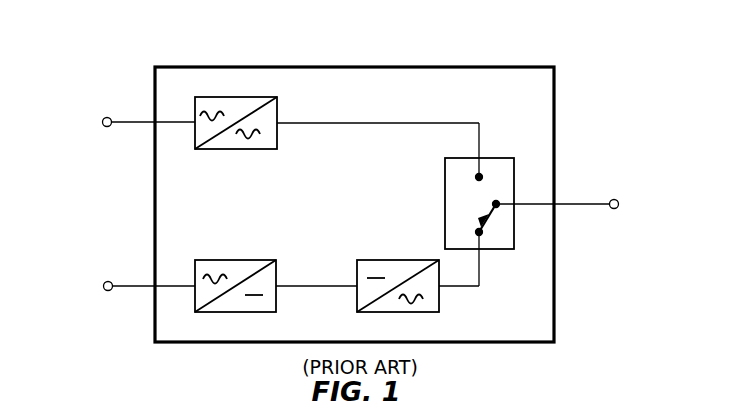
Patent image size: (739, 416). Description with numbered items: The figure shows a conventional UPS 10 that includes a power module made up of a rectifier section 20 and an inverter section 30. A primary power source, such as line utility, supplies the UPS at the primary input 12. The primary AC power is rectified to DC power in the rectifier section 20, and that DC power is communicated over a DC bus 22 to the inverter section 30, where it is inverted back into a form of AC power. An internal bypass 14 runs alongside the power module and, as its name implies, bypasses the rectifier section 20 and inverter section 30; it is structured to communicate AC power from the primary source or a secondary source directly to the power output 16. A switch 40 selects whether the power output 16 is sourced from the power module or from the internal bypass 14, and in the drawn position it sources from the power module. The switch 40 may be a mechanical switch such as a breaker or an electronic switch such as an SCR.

The UPS 10 is at (122, 40).
The primary input 12 is at (133, 284).
The internal bypass 14 is at (456, 122).
The power output 16 is at (587, 203).
The rectifier section 20 is at (215, 259).
The DC bus 22 is at (322, 285).
The inverter section 30 is at (378, 259).
The switch 40 is at (445, 204).